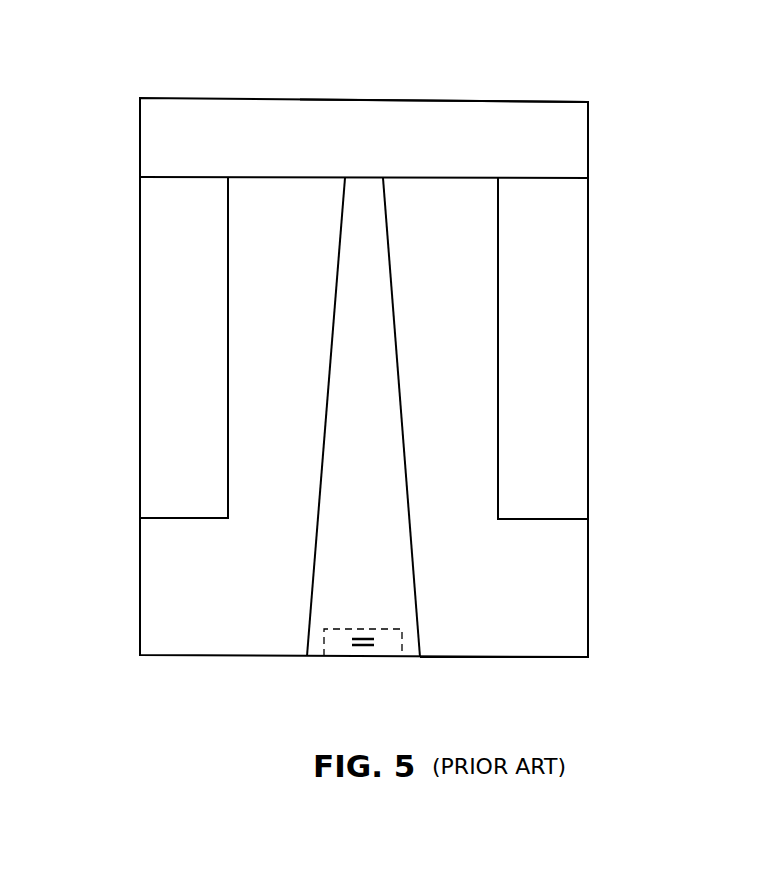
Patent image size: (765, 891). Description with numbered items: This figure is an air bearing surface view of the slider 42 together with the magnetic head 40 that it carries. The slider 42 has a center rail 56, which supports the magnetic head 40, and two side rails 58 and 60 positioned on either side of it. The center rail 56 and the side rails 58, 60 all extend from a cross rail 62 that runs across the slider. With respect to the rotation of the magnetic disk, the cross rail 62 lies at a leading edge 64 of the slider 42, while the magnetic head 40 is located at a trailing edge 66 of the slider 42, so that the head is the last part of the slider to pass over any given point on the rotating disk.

The magnetic head 40 is at (340, 652).
The slider 42 is at (139, 604).
The center rail 56 is at (348, 292).
The side rail 58 is at (156, 258).
The side rail 60 is at (570, 261).
The cross rail 62 is at (284, 110).
The leading edge 64 is at (463, 101).
The trailing edge 66 is at (485, 657).